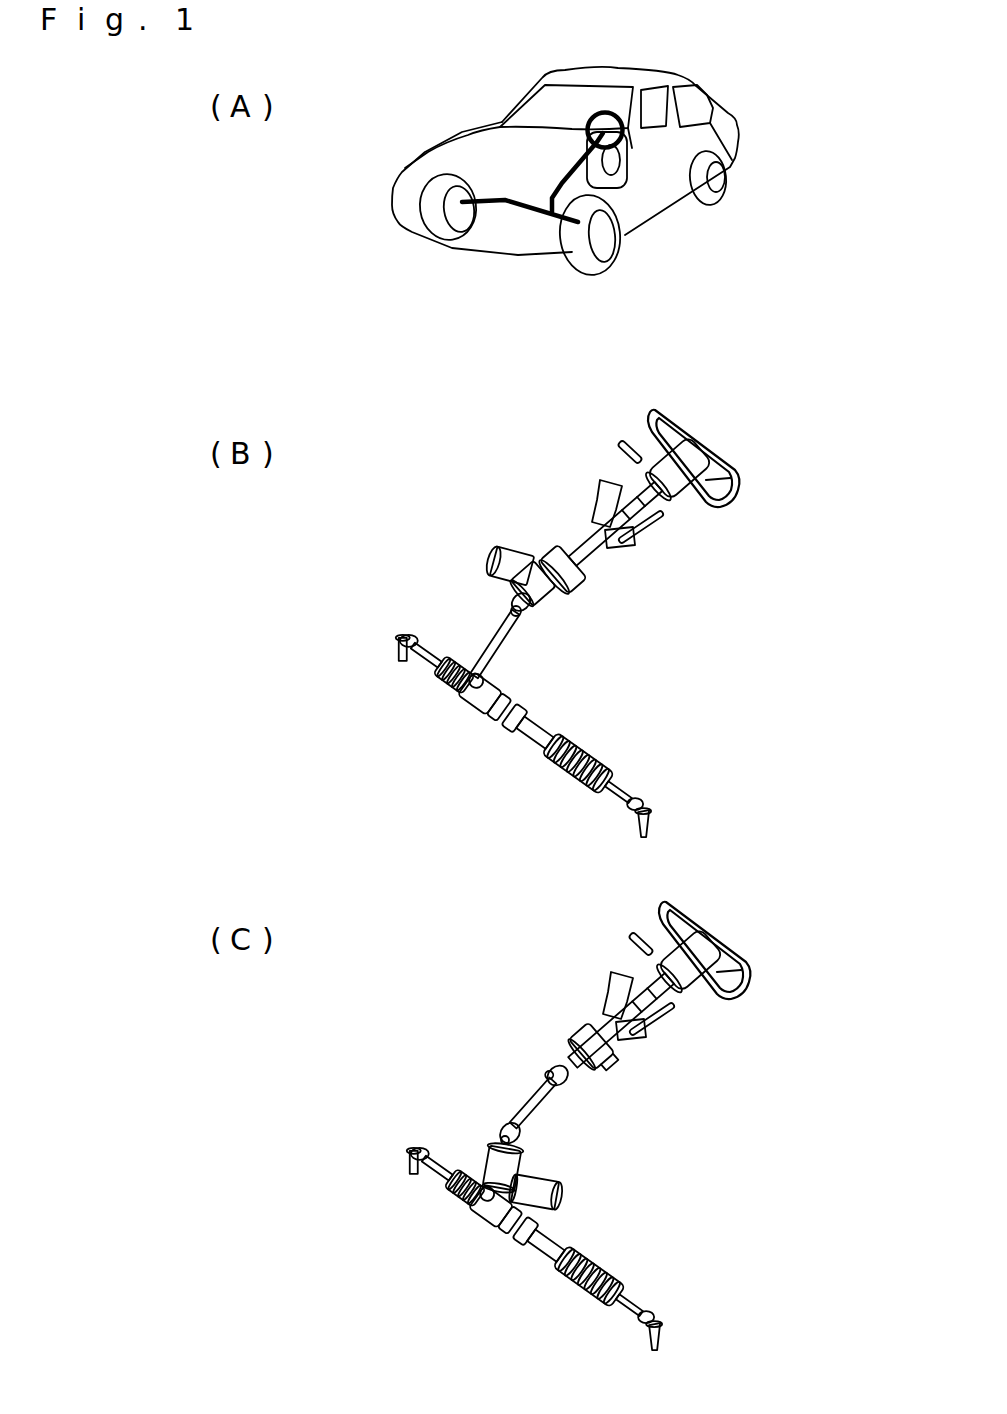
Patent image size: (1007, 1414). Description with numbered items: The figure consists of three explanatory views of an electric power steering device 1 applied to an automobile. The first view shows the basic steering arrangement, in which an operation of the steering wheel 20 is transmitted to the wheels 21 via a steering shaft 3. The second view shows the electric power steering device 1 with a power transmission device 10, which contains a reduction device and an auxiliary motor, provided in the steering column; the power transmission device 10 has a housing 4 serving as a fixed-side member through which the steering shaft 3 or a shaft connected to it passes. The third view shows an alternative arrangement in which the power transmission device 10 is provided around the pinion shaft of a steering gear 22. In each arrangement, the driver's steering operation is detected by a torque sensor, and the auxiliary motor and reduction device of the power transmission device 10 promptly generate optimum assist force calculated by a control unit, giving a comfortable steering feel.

The electric power steering device 1 is at (533, 465).
The steering shaft 3 is at (563, 177).
The housing 4 is at (553, 583).
The power transmission device 10 is at (495, 540).
The steering wheel 20 is at (588, 118).
The wheels 21 is at (433, 222).
The steering gear 22 is at (483, 1225).